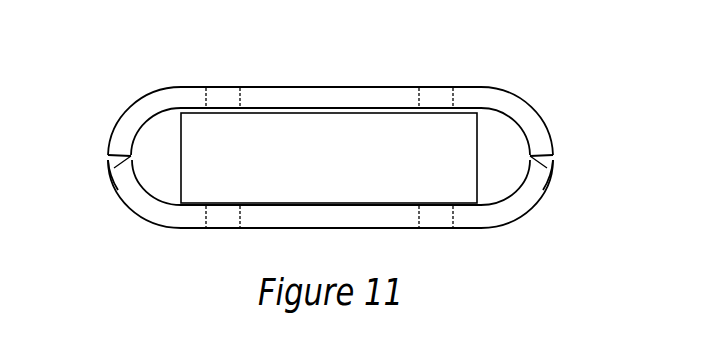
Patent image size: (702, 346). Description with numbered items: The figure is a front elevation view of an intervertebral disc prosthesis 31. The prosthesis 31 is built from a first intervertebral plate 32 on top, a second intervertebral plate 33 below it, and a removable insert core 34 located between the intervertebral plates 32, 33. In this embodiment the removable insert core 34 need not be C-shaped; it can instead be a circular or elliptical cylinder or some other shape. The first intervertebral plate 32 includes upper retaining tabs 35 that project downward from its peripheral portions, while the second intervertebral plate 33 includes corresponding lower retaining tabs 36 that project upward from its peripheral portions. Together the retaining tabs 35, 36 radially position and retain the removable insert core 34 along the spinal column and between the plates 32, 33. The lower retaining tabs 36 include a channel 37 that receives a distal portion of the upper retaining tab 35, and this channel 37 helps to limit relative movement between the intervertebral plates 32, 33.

The intervertebral disc prosthesis 31 is at (325, 144).
The first intervertebral plate 32 is at (317, 87).
The second intervertebral plate 33 is at (312, 228).
The removable insert core 34 is at (180, 137).
The upper retaining tabs 35 is at (110, 152).
The lower retaining tabs 36 is at (113, 182).
The channel 37 is at (109, 163).